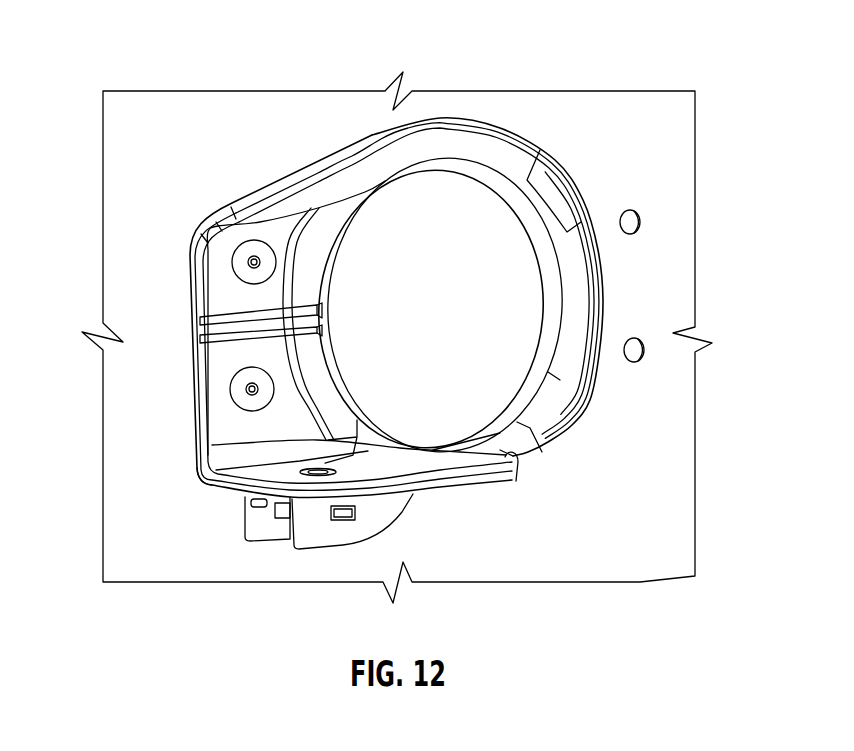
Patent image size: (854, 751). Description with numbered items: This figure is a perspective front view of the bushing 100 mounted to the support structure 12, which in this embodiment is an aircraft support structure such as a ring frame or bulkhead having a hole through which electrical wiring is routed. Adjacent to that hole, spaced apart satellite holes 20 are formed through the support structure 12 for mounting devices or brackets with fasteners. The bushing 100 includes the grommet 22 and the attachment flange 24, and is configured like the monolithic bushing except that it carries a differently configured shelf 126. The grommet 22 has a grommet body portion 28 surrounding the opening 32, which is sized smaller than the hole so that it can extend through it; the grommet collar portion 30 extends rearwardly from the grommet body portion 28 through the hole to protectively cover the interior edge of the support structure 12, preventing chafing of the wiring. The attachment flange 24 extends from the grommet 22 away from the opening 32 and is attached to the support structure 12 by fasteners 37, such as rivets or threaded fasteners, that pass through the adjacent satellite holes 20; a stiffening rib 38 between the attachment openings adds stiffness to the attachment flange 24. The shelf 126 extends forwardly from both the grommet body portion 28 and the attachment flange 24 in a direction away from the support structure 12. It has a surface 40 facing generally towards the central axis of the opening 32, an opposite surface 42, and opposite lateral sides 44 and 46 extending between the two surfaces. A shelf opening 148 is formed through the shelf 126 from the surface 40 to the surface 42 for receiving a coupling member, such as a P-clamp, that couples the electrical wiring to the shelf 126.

The bushing 100 is at (645, 60).
The support structure 12 is at (112, 188).
The satellite holes 20 is at (643, 222).
The grommet 22 is at (583, 302).
The attachment flange 24 is at (205, 303).
The grommet body portion 28 is at (548, 192).
The grommet collar portion 30 is at (553, 350).
The opening 32 is at (512, 350).
The fasteners 37 is at (243, 262).
The stiffening rib 38 is at (203, 332).
The surface 40 is at (393, 473).
The surface 42 is at (440, 493).
The lateral side 44 is at (220, 472).
The lateral side 46 is at (508, 462).
The shelf 126 is at (433, 463).
The shelf opening 148 is at (320, 472).